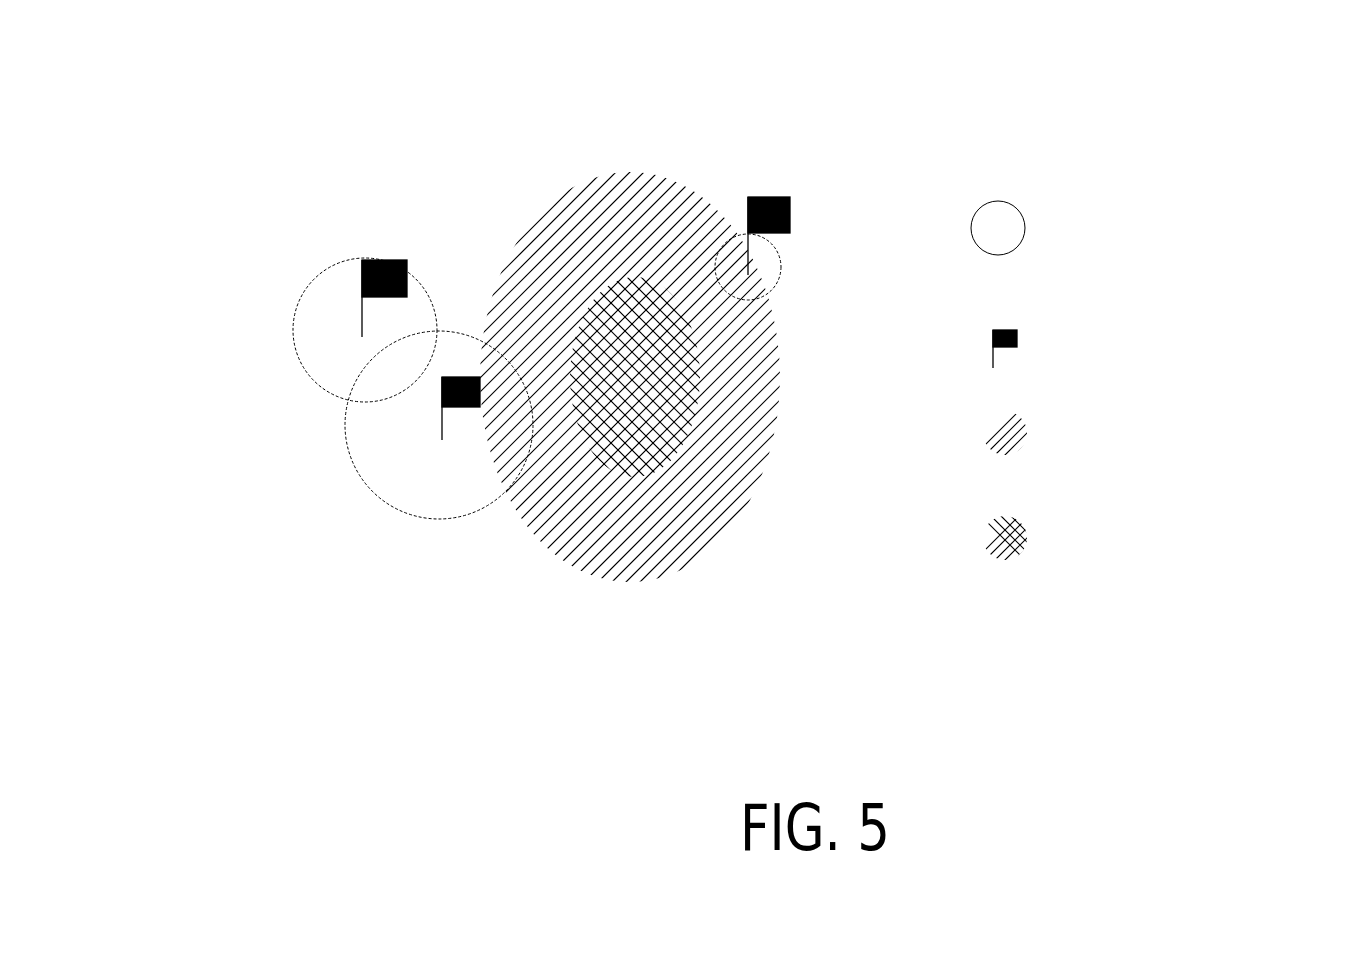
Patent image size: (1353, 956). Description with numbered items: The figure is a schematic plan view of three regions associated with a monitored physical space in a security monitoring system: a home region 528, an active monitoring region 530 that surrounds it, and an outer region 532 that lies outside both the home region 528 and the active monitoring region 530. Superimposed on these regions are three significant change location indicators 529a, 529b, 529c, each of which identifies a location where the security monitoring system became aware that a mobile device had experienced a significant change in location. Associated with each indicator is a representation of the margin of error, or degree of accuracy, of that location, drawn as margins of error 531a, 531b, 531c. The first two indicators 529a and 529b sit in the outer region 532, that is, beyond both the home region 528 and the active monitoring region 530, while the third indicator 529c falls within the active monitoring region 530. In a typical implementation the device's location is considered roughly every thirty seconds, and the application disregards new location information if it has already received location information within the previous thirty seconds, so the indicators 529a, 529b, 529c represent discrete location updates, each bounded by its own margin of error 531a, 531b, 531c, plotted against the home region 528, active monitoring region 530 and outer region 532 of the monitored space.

The home region 528 is at (615, 352).
The significant change location indicator 529a is at (353, 305).
The significant change location indicator 529b is at (423, 422).
The significant change location indicator 529c is at (740, 215).
The active monitoring region 530 is at (697, 483).
The margin of error 531a is at (362, 258).
The margin of error 531b is at (397, 508).
The margin of error 531c is at (773, 243).
The outer region 532 is at (835, 648).